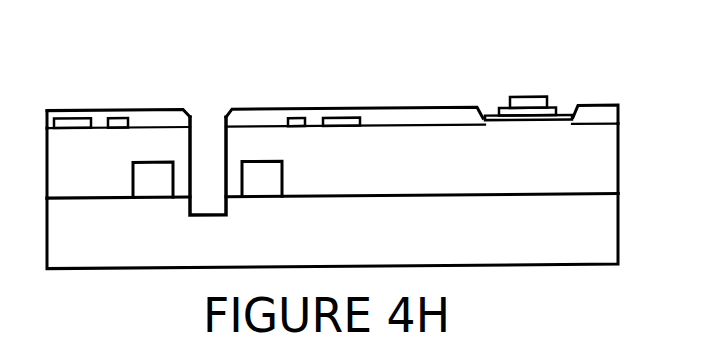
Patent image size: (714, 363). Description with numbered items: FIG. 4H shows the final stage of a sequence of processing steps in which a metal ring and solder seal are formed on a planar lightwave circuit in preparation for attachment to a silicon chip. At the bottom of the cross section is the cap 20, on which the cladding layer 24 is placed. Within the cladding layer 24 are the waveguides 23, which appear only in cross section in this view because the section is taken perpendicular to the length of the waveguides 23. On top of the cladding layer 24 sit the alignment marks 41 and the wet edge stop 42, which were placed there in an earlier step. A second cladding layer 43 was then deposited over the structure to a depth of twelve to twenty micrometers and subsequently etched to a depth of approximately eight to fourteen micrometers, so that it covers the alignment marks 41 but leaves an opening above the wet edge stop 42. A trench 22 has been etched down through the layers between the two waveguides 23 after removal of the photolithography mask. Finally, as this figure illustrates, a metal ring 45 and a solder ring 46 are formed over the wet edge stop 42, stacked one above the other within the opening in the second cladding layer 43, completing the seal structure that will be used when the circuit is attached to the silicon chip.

The cap 20 is at (542, 256).
The trench 22 is at (223, 188).
The waveguides 23 is at (152, 201).
The cladding layer 24 is at (470, 184).
The alignment marks 41 is at (112, 133).
The wet edge stop 42 is at (520, 127).
The second cladding layer 43 is at (260, 110).
The metal ring 45 is at (503, 106).
The solder ring 46 is at (533, 101).